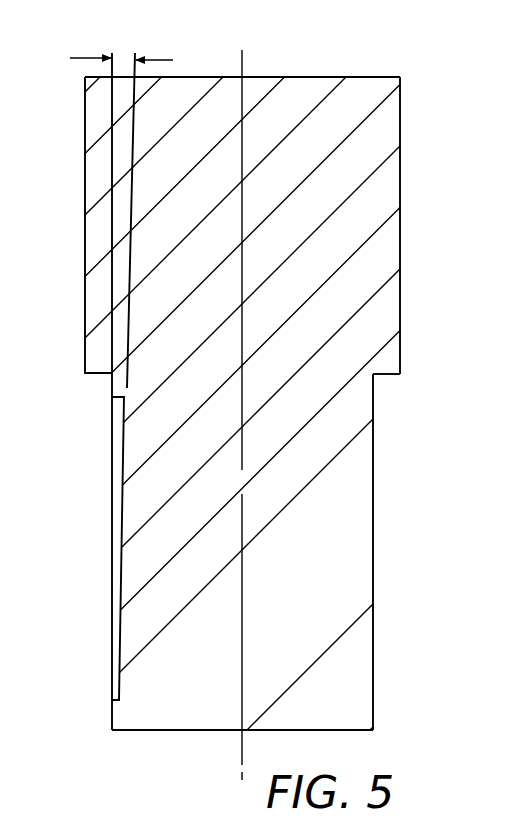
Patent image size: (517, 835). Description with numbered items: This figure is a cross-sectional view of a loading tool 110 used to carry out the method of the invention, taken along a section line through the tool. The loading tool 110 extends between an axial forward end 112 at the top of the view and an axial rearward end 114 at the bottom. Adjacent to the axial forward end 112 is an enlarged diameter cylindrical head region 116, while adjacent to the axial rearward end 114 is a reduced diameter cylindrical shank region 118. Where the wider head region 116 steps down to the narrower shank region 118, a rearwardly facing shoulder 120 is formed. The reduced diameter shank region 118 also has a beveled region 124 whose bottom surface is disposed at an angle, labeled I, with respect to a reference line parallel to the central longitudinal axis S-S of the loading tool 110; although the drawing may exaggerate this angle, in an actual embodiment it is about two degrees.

The loading tool 110 is at (438, 80).
The axial forward end 112 is at (200, 77).
The axial rearward end 114 is at (157, 730).
The enlarged diameter cylindrical head region 116 is at (400, 200).
The reduced diameter cylindrical shank region 118 is at (374, 473).
The rearwardly facing shoulder 120 is at (380, 376).
The beveled region 124 is at (116, 520).